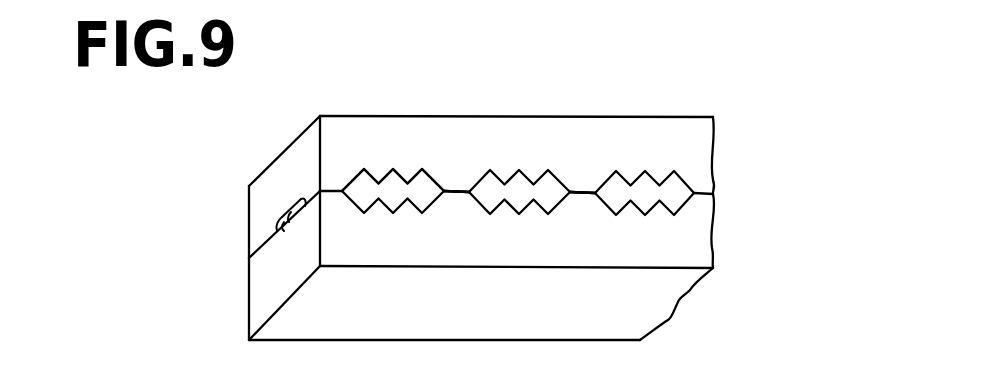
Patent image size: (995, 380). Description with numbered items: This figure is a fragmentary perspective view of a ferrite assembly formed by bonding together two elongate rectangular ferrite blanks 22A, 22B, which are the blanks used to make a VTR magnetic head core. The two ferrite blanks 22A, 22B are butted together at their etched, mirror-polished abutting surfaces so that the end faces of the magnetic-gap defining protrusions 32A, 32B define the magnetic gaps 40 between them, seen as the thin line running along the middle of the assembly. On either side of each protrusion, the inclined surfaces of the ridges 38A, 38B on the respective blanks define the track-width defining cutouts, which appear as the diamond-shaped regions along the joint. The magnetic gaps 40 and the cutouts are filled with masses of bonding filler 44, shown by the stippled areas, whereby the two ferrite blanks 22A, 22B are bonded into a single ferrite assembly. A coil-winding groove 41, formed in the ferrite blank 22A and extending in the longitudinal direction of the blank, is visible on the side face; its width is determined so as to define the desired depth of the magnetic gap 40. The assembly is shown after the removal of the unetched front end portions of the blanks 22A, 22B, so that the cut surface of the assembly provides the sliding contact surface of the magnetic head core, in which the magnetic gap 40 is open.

The ferrite blank 22A is at (688, 128).
The ferrite blank 22B is at (667, 292).
The magnetic-gap defining protrusion 32A is at (463, 180).
The magnetic-gap defining protrusion 32B is at (455, 200).
The ridge 38A is at (408, 167).
The ridge 38B is at (407, 214).
The magnetic gap 40 is at (455, 190).
The coil-winding groove 41 is at (278, 227).
The bonding filler 44 is at (362, 190).